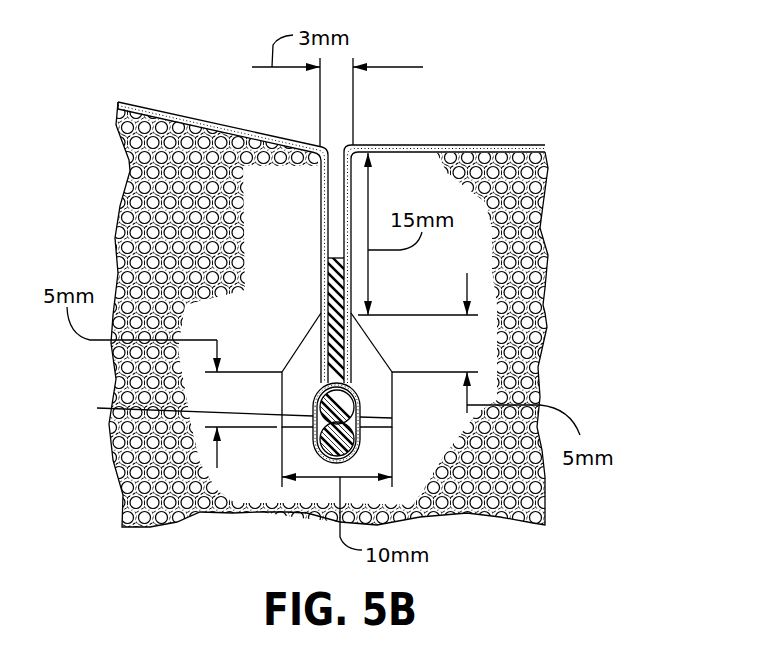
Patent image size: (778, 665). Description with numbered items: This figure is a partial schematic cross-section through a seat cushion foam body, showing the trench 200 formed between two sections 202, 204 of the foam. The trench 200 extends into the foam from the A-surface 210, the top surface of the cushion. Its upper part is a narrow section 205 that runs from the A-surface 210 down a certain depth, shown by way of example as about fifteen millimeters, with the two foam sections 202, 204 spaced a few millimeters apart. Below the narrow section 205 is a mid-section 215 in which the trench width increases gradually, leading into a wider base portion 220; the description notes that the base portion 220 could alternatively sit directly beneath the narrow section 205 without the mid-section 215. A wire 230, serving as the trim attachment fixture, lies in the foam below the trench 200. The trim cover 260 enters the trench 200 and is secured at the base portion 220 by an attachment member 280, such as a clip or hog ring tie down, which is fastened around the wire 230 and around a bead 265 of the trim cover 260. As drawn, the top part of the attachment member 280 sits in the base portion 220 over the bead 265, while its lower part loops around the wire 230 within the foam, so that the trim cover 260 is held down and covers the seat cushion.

The trench 200 is at (360, 302).
The section of the foam body 202 is at (210, 153).
The section of the foam body 204 is at (520, 165).
The narrow section 205 is at (320, 248).
The A-surface 210 is at (432, 143).
The mid-section 215 is at (377, 345).
The base portion 220 is at (291, 406).
The wire 230 is at (313, 445).
The trim cover 260 is at (325, 362).
The bead 265 is at (224, 409).
The attachment member 280 is at (360, 440).